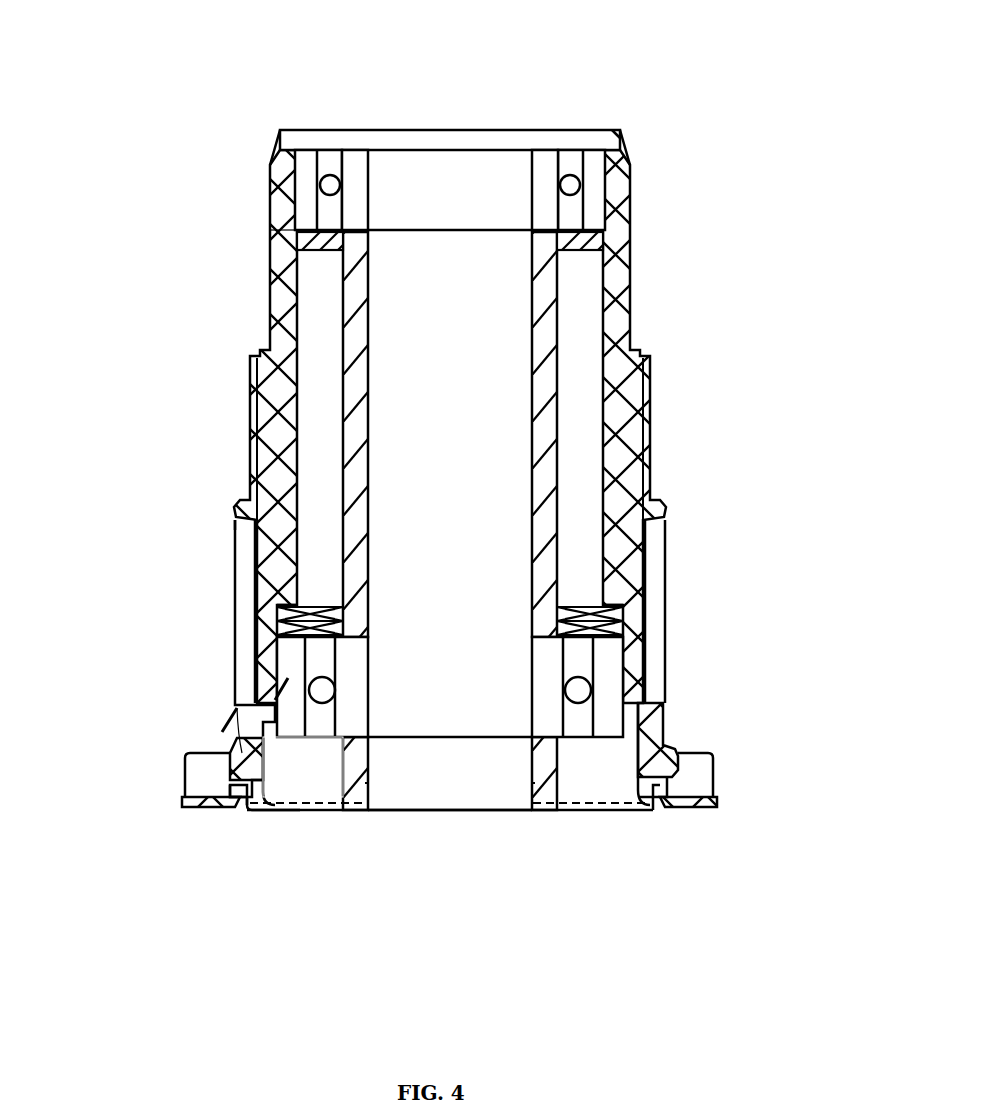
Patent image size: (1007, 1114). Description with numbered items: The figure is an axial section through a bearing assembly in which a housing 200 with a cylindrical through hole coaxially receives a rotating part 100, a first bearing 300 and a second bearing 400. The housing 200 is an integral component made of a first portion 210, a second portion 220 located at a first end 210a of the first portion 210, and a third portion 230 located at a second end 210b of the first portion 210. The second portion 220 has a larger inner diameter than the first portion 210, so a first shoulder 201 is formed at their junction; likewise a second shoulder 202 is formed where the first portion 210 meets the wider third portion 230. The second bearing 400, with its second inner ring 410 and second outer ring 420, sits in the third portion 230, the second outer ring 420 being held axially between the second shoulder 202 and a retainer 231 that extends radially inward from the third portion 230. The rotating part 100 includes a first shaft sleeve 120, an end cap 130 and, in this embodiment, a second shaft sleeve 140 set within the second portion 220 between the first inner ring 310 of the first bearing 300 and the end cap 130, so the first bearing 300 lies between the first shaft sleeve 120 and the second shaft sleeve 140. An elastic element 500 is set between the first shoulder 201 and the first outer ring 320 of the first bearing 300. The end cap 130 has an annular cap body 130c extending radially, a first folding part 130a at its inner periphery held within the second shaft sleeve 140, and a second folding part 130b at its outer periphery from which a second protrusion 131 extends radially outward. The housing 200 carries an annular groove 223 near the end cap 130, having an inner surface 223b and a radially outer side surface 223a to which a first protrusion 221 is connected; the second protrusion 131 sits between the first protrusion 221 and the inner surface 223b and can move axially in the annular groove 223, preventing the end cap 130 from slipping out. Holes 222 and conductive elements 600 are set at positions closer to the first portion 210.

The rotating part 100 is at (810, 707).
The first shaft sleeve 120 is at (545, 415).
The end cap 130 is at (663, 753).
The first folding part 130a is at (530, 790).
The second folding part 130b is at (287, 812).
The annular cap body 130c is at (322, 812).
The second protrusion 131 is at (642, 800).
The second shaft sleeve 140 is at (555, 720).
The housing 200 is at (100, 182).
The first shoulder 201 is at (600, 600).
The second shoulder 202 is at (580, 205).
The first portion 210 is at (247, 385).
The first end 210a is at (190, 603).
The second end 210b is at (272, 230).
The second portion 220 is at (233, 668).
The first protrusion 221 is at (667, 800).
The holes 222 is at (236, 738).
The annular groove 223 is at (230, 787).
The side surface 223a is at (235, 808).
The inner surface 223b is at (243, 783).
The third portion 230 is at (268, 210).
The retainer 231 is at (612, 140).
The first bearing 300 is at (617, 915).
The first inner ring 310 is at (563, 737).
The first outer ring 320 is at (593, 737).
The second bearing 400 is at (342, 56).
The second inner ring 410 is at (358, 150).
The second outer ring 420 is at (300, 150).
The elastic element 500 is at (560, 590).
The conductive elements 600 is at (222, 728).